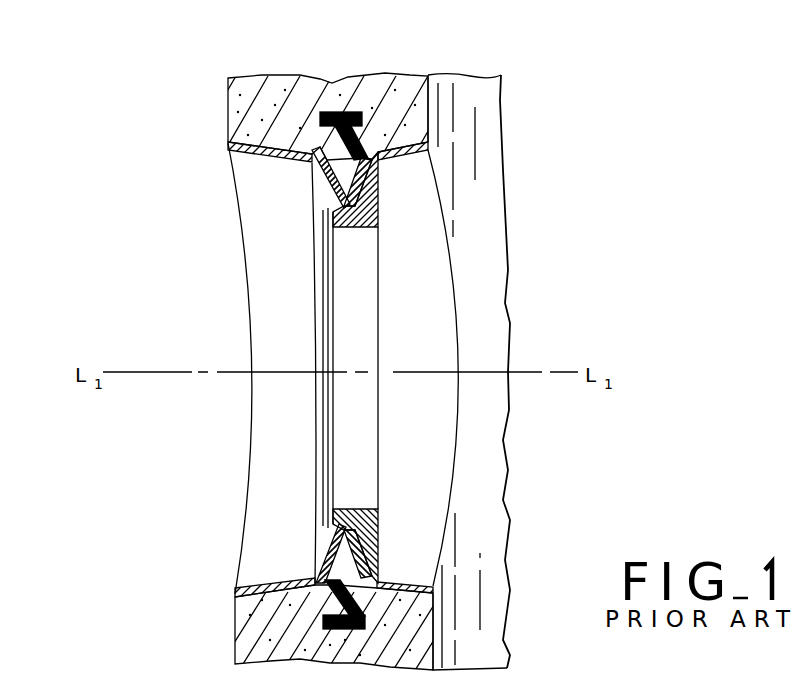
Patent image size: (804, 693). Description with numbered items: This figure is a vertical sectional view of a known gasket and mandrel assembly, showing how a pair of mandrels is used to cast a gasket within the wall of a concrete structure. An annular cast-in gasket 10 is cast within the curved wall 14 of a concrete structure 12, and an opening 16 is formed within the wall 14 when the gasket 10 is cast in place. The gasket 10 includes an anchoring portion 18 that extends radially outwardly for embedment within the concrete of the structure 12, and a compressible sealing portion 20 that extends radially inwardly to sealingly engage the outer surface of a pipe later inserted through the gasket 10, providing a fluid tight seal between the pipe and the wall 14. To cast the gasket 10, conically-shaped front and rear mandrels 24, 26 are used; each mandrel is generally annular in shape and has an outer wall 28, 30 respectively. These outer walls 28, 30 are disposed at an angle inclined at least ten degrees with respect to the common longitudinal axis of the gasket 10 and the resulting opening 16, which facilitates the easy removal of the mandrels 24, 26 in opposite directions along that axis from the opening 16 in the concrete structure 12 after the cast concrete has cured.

The cast-in gasket 10 is at (357, 104).
The concrete structure 12 is at (510, 78).
The curved wall 14 is at (255, 111).
The opening 16 is at (428, 153).
The anchoring portion 18 is at (328, 113).
The compressible sealing portion 20 is at (318, 191).
The front mandrel 24 is at (253, 229).
The rear mandrel 26 is at (428, 263).
The outer wall of front mandrel 28 is at (308, 162).
The outer wall of rear mandrel 30 is at (413, 157).